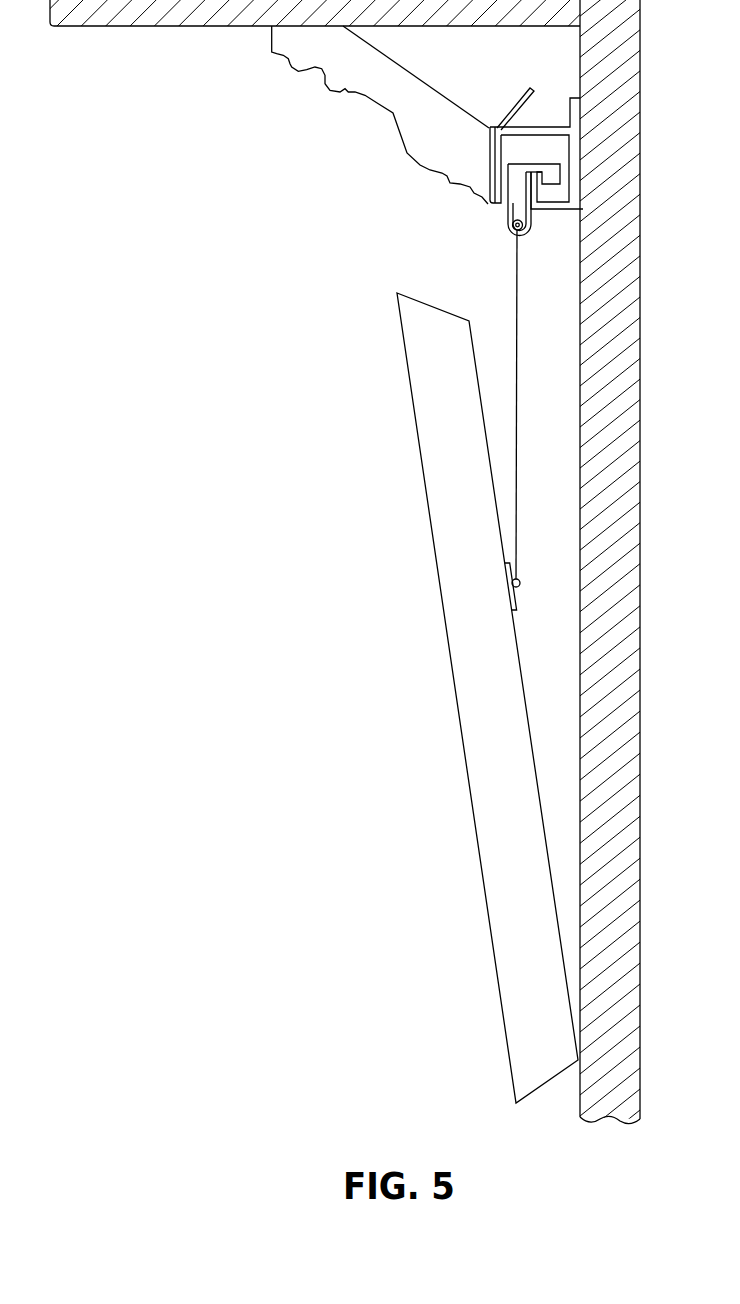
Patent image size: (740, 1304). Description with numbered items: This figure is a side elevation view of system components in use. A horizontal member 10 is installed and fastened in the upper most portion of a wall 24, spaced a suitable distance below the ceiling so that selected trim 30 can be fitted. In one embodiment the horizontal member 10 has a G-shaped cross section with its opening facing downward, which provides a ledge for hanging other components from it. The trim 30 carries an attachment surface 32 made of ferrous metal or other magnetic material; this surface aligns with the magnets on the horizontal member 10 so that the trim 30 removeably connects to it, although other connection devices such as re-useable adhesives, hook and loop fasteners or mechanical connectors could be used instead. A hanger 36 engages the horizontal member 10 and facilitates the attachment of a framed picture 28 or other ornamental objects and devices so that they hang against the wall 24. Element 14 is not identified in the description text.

The horizontal member 10 is at (544, 118).
The mounting strip 14 is at (510, 112).
The wall 24 is at (612, 159).
The framed picture 28 is at (457, 527).
The trim 30 is at (385, 88).
The attachment surface 32 is at (492, 180).
The hanger 36 is at (513, 203).